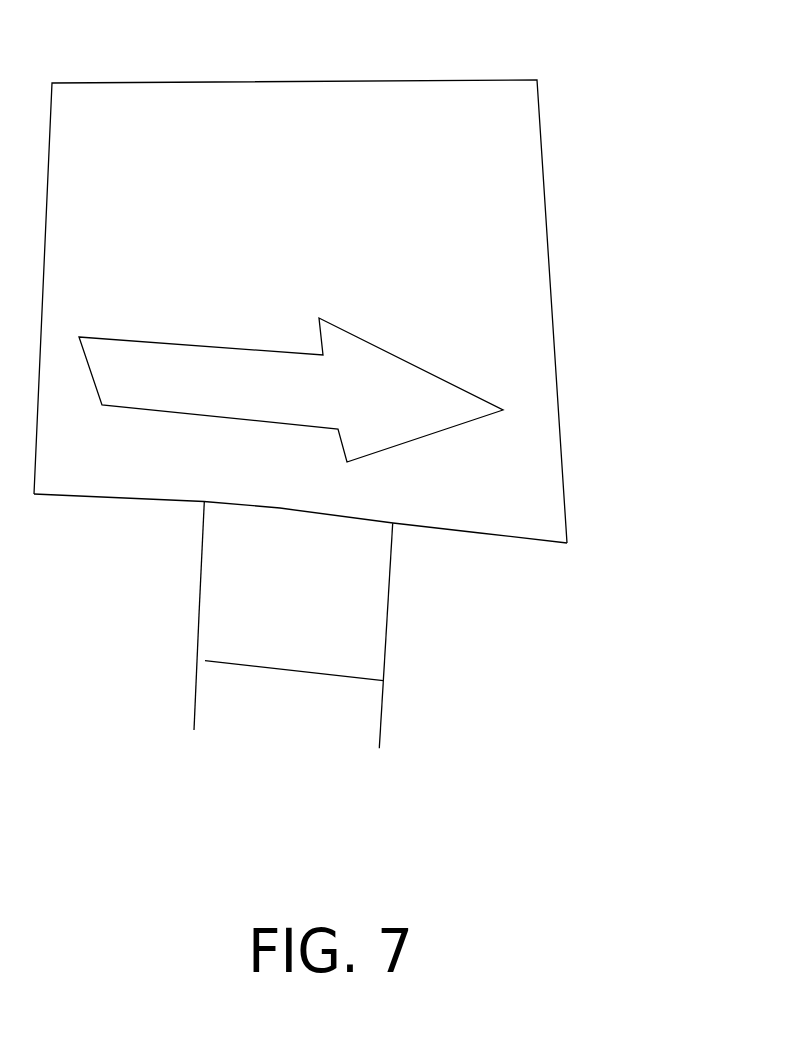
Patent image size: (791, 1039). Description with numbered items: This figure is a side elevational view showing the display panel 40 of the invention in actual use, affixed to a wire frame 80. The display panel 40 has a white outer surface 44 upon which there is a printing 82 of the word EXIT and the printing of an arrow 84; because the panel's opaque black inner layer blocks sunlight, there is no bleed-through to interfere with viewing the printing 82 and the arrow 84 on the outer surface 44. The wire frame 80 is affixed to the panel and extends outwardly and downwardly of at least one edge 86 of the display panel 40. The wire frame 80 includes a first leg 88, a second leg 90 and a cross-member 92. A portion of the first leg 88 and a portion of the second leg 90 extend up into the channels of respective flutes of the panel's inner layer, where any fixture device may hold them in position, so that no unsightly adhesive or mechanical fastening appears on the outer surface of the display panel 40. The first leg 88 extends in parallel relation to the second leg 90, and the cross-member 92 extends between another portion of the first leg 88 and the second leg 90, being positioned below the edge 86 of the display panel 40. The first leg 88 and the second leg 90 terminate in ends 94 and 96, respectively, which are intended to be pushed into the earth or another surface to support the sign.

The display panel 40 is at (347, 313).
The outer surface 44 is at (532, 303).
The wire frame 80 is at (355, 634).
The printing 82 is at (468, 125).
The arrow 84 is at (136, 410).
The edge 86 is at (513, 538).
The first leg 88 is at (202, 585).
The second leg 90 is at (388, 602).
The cross-member 92 is at (278, 667).
The end 94 is at (197, 702).
The end 96 is at (382, 717).